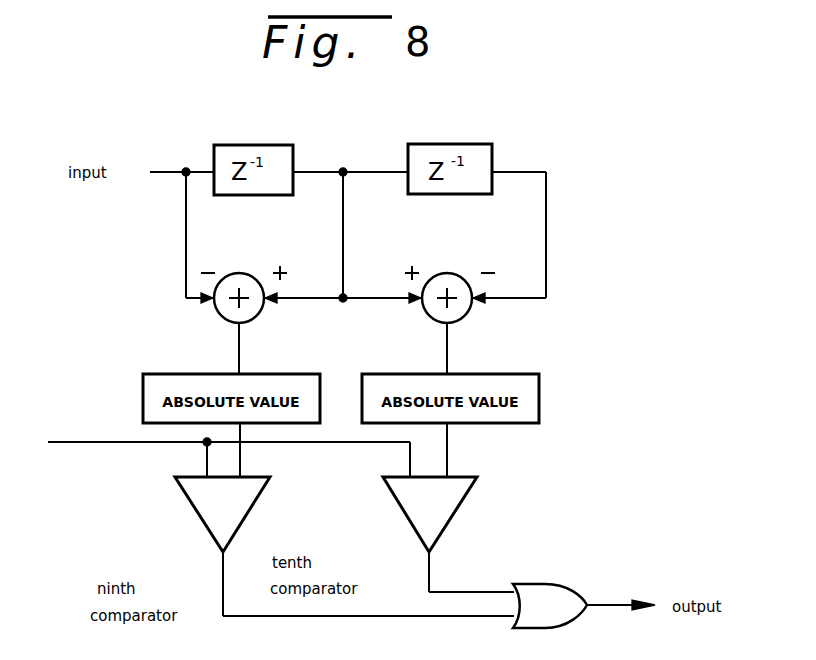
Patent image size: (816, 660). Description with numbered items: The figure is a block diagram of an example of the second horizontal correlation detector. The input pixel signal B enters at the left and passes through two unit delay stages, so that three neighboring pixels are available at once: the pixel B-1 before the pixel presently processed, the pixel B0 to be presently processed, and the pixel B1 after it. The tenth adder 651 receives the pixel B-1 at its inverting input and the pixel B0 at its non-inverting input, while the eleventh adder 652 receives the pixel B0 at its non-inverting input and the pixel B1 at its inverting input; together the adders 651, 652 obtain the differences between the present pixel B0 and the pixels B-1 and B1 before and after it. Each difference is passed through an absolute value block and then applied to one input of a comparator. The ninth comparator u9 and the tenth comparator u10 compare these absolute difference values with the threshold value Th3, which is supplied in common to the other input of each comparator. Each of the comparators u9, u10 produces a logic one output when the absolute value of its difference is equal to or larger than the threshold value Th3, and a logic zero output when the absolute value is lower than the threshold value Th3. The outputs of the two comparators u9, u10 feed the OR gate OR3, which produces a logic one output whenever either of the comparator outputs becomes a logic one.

The input pixel signal B is at (179, 155).
The preceding pixel B-1 is at (186, 176).
The pixel to be presently processed B0 is at (343, 176).
The following pixel B1 is at (521, 176).
The tenth adder 651 is at (219, 311).
The eleventh adder 652 is at (428, 311).
The threshold value Th3 is at (229, 444).
The ninth comparator u9 is at (199, 509).
The tenth comparator u10 is at (405, 507).
The OR gate OR3 is at (584, 606).